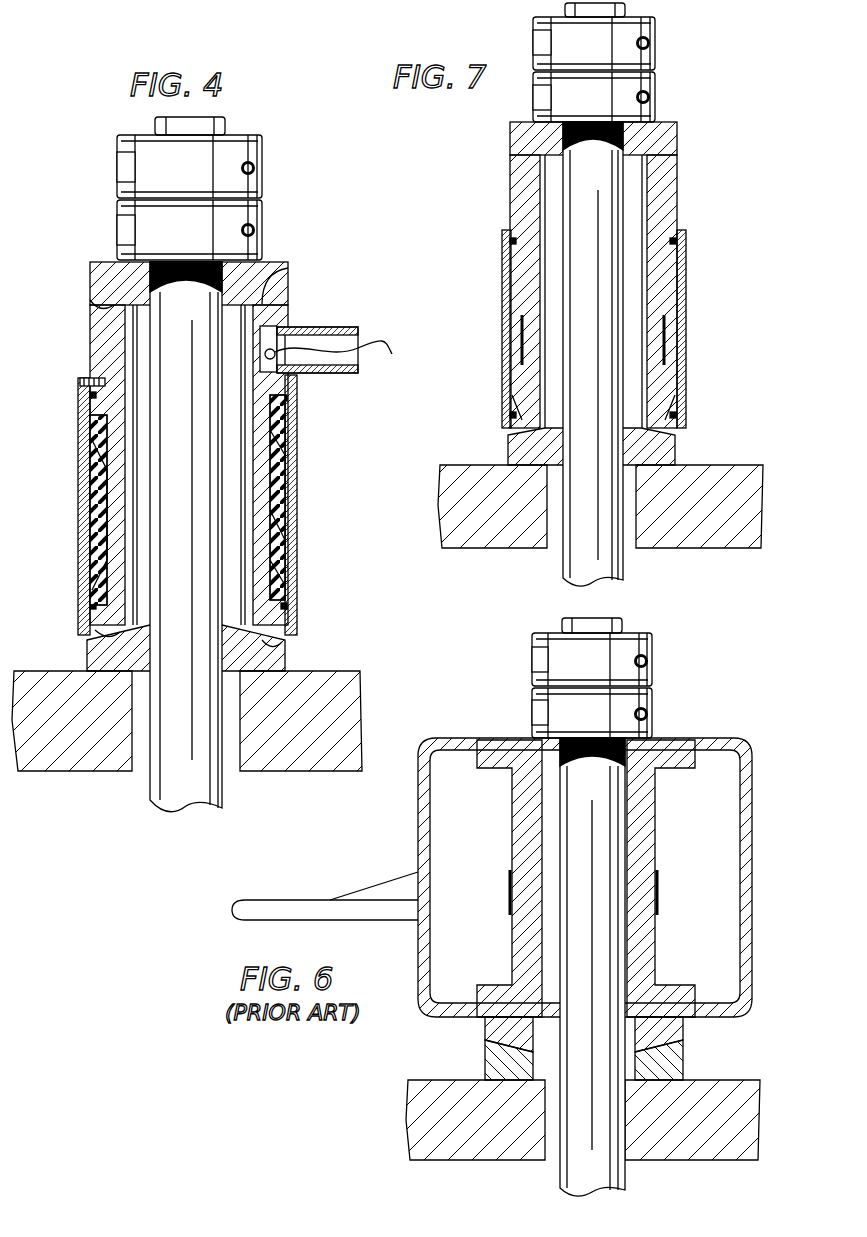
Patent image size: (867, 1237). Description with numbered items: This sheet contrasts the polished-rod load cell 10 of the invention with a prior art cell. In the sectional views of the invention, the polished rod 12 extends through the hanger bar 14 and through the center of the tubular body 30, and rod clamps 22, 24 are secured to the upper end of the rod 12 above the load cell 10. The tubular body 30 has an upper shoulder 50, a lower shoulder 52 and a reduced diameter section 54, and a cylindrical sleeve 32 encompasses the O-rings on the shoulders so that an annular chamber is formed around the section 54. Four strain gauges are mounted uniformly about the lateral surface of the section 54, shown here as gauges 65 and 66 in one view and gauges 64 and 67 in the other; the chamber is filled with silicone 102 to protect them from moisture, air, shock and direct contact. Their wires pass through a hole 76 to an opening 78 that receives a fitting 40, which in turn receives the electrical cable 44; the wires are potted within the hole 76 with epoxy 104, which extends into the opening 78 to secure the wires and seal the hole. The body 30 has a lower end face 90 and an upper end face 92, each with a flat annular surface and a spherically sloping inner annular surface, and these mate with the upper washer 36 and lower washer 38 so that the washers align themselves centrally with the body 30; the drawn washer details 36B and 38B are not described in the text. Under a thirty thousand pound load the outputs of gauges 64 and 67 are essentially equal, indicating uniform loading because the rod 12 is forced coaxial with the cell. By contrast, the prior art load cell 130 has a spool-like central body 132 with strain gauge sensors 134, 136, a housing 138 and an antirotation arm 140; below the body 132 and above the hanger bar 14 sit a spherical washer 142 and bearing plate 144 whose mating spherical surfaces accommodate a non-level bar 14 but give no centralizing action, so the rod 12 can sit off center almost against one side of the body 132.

In FIG. 4, the load cell 10 is at (330, 218).
In FIG. 7, the load cell 10 is at (765, 176).
In FIG. 4, the polished rod 12 is at (224, 788).
In FIG. 7, the polished rod 12 is at (625, 566).
In FIG. 6, the polished rod 12 is at (626, 1176).
In FIG. 4, the hanger bar 14 is at (320, 727).
In FIG. 7, the hanger bar 14 is at (705, 518).
In FIG. 6, the hanger bar 14 is at (703, 1129).
In FIG. 4, the rod clamp 22 is at (117, 165).
In FIG. 7, the rod clamp 22 is at (656, 45).
In FIG. 6, the rod clamp 22 is at (532, 661).
In FIG. 4, the rod clamp 24 is at (117, 230).
In FIG. 7, the rod clamp 24 is at (656, 99).
In FIG. 6, the rod clamp 24 is at (532, 714).
In FIG. 4, the tubular body 30 is at (64, 373).
In FIG. 7, the tubular body 30 is at (708, 250).
In FIG. 4, the cylindrical sleeve 32 is at (297, 465).
In FIG. 7, the cylindrical sleeve 32 is at (687, 272).
In FIG. 4, the upper washer 36 is at (90, 272).
In FIG. 7, the upper washer 36 is at (678, 135).
In FIG. 4, the upper gland block notch 36B is at (90, 305).
In FIG. 4, the lower washer 38 is at (87, 662).
In FIG. 7, the lower washer 38 is at (508, 452).
In FIG. 4, the lower gland block notch 38B is at (95, 632).
In FIG. 4, the fitting 40 is at (332, 328).
In FIG. 4, the electrical cable 44 is at (386, 350).
In FIG. 4, the upper shoulder 50 is at (90, 335).
In FIG. 7, the upper shoulder 50 is at (678, 186).
In FIG. 4, the lower shoulder 52 is at (287, 604).
In FIG. 4, the reduced diameter section 54 is at (283, 560).
In FIG. 4, the strain gauge 65 is at (97, 520).
In FIG. 4, the strain gauge 66 is at (287, 525).
In FIG. 4, the hole 76 is at (292, 398).
In FIG. 4, the opening 78 is at (268, 345).
In FIG. 4, the lower end face 90 is at (282, 644).
In FIG. 4, the upper end face 92 is at (280, 290).
In FIG. 4, the silicone 102 is at (97, 574).
In FIG. 4, the epoxy 104 is at (288, 440).
In FIG. 7, the strain gauge 64 is at (520, 338).
In FIG. 7, the strain gauge 67 is at (666, 338).
In FIG. 6, the prior art load cell 130 is at (725, 671).
In FIG. 6, the spool-like central body 132 is at (672, 740).
In FIG. 6, the strain gauge sensor 134 is at (510, 892).
In FIG. 6, the strain gauge sensor 136 is at (657, 892).
In FIG. 6, the housing 138 is at (418, 828).
In FIG. 6, the antirotation arm 140 is at (235, 910).
In FIG. 6, the spherical washer 142 is at (485, 1030).
In FIG. 6, the bearing plate 144 is at (683, 1052).